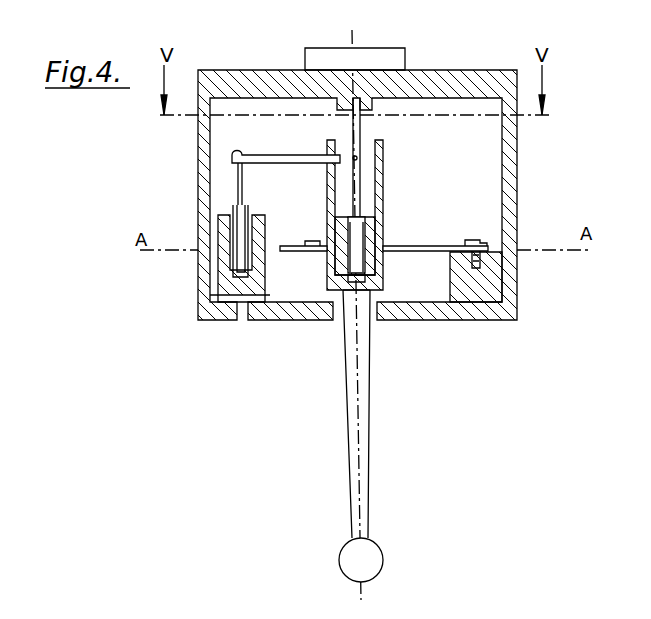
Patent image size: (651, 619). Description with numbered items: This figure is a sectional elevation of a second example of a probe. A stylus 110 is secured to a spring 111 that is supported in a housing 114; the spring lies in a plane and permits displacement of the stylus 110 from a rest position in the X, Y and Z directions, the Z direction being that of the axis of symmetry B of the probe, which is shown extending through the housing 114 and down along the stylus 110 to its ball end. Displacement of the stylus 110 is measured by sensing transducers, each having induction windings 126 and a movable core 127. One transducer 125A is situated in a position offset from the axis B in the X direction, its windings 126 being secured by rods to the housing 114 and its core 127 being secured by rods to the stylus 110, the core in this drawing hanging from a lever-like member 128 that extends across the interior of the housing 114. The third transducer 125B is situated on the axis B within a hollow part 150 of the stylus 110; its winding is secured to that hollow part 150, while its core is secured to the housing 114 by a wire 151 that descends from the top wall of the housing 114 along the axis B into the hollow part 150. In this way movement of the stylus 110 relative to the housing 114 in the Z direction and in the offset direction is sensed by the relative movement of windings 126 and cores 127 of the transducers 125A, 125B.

The housing 114 is at (238, 86).
The wire 151 is at (352, 125).
The hollow part 150 is at (384, 190).
The lever beam 128 is at (232, 156).
The third sensing transducer 125B is at (358, 234).
The spring 111 is at (452, 246).
The induction windings 126 is at (220, 217).
The movable core 127 is at (240, 254).
The sensing transducer 125A is at (222, 288).
The stylus 110 is at (371, 378).
The Z direction Z is at (363, 448).
The axis of symmetry B is at (362, 495).